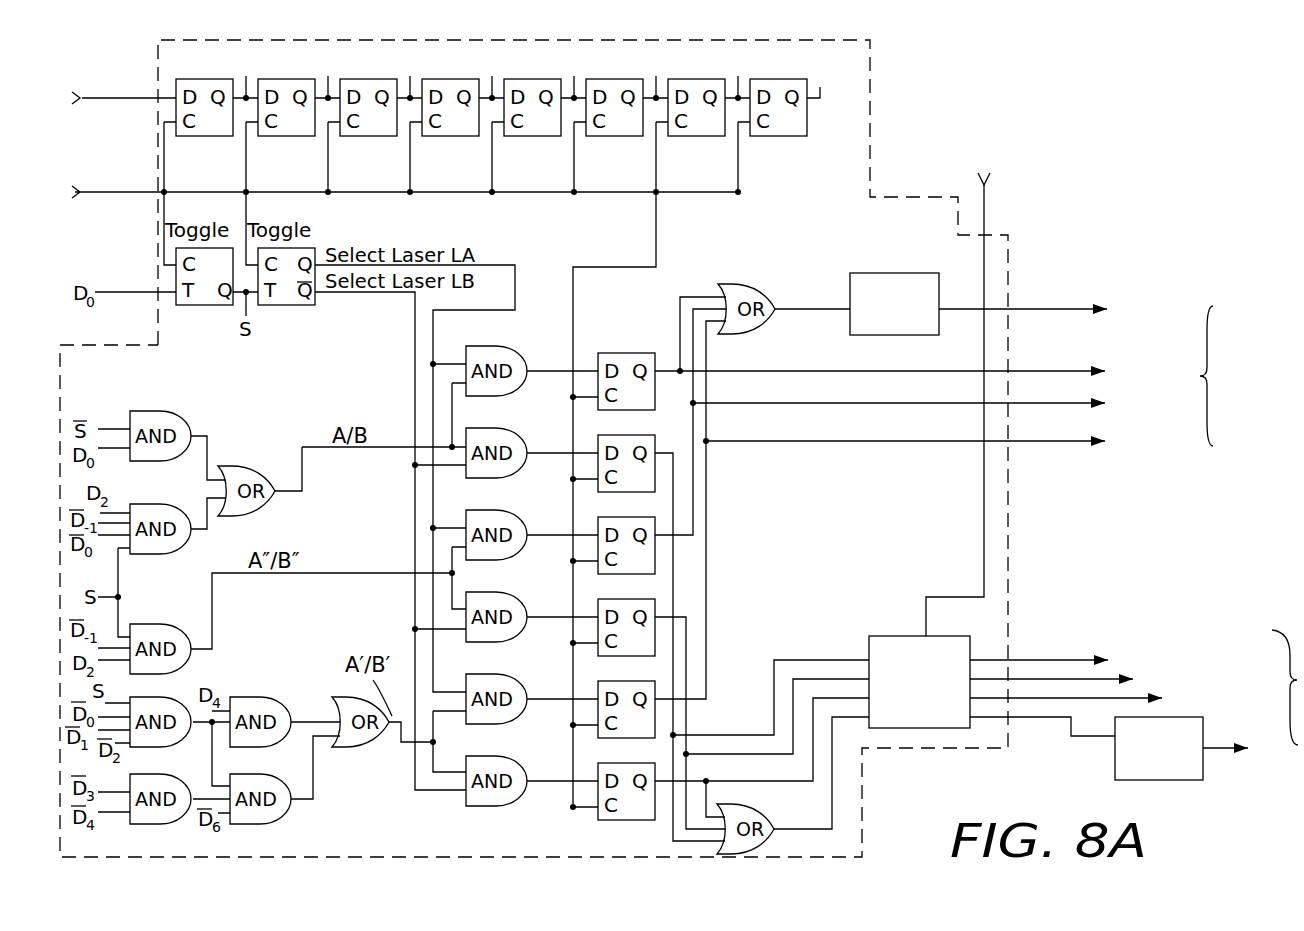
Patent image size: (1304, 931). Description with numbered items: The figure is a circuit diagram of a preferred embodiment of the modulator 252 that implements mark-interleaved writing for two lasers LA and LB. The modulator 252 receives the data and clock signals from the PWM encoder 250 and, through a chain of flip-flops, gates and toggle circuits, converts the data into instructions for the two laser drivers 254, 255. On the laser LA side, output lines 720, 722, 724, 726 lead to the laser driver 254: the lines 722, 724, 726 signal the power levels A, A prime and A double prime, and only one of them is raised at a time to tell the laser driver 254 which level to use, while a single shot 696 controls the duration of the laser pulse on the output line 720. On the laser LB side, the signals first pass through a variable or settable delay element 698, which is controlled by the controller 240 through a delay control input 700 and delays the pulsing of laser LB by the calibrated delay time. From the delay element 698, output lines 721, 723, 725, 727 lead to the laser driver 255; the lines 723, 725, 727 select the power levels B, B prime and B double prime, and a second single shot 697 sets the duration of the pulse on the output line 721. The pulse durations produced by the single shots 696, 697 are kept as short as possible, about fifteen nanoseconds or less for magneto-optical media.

The PWM encoder 250 is at (405, 160).
The modulator 252 is at (870, 85).
The controller 240 is at (1021, 149).
The delay control input 700 is at (984, 205).
The single shot 696 is at (898, 273).
The output line 720 is at (1060, 308).
The output line 722 is at (1063, 371).
The output line 726 is at (1023, 403).
The output line 724 is at (1012, 441).
The laser driver 254 is at (1250, 376).
The settable delay element 698 is at (900, 636).
The output line 723 is at (1100, 658).
The output line 727 is at (1128, 675).
The output line 725 is at (1162, 694).
The output line 721 is at (1225, 745).
The single shot 697 is at (1115, 762).
The laser driver 255 is at (1266, 642).